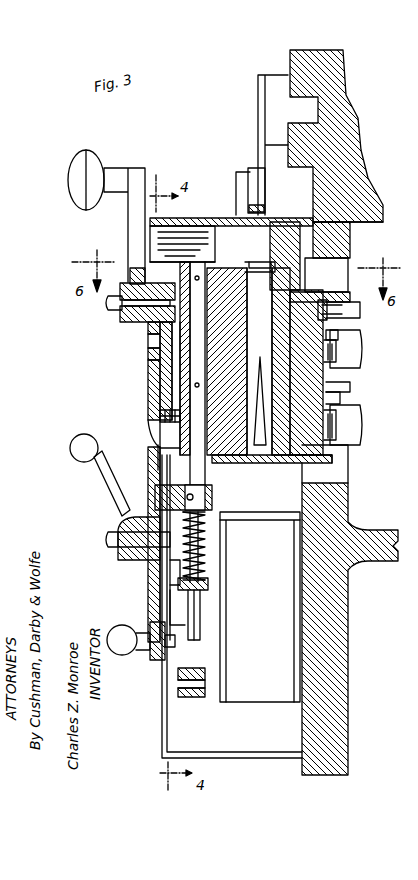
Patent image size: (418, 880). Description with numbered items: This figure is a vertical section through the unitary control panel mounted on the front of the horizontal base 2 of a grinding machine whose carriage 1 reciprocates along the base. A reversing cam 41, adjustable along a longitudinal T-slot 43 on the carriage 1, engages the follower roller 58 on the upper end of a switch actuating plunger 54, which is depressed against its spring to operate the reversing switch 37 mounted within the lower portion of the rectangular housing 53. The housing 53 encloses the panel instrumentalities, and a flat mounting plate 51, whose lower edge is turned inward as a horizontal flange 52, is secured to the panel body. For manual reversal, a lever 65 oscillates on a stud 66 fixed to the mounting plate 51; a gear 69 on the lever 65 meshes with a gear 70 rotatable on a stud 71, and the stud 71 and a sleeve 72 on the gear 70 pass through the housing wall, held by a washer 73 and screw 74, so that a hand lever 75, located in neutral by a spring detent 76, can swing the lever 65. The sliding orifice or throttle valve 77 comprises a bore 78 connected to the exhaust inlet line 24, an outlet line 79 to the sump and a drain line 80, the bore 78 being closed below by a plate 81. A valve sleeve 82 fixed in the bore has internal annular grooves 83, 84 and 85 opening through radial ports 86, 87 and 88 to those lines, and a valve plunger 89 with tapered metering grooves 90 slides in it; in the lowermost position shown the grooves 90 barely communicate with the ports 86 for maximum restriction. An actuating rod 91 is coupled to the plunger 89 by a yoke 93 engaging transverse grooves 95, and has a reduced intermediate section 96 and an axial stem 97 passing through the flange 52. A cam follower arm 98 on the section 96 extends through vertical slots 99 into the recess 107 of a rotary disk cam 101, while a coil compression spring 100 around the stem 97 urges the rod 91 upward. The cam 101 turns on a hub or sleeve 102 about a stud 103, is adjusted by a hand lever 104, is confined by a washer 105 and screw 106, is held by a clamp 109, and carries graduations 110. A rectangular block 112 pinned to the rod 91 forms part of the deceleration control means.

The carriage 1 is at (322, 50).
The horizontal base 2 is at (340, 694).
The exhaust inlet line 24 is at (358, 350).
The reversing switch 37 is at (254, 702).
The reversing cam 41 is at (274, 80).
The longitudinal T-slot 43 is at (320, 108).
The mounting plate 51 is at (164, 362).
The horizontal flange 52 is at (200, 603).
The rectangular housing 53 is at (234, 762).
The switch actuating plunger 54 is at (244, 172).
The follower roller 58 is at (258, 190).
The lever 65 is at (152, 346).
The stud 66 is at (150, 336).
The gear 69 is at (152, 358).
The gear 70 is at (212, 262).
The stud 71 is at (140, 322).
The sleeve 72 is at (193, 262).
The washer 73 is at (122, 312).
The screw 74 is at (108, 302).
The hand lever 75 is at (70, 176).
The spring detent 76 is at (132, 268).
The orifice or throttle valve 77 is at (274, 265).
The bore 78 is at (354, 432).
The outlet line 79 is at (350, 416).
The drain line 80 is at (354, 302).
The plate 81 is at (282, 458).
The valve sleeve 82 is at (352, 318).
The internal annular groove 83 is at (340, 334).
The internal annular groove 84 is at (250, 458).
The internal annular groove 85 is at (318, 290).
The radial inlet ports 86 is at (258, 362).
The radial outlet ports 87 is at (302, 466).
The radial ports 88 is at (228, 282).
The valve plunger 89 is at (318, 190).
The metering grooves 90 is at (346, 384).
The actuating rod 91 is at (162, 406).
The yoke 93 is at (218, 268).
The transverse grooves 95 is at (258, 262).
The intermediate rod section 96 is at (212, 495).
The axial stem 97 is at (194, 618).
The cam follower arm 98 is at (160, 478).
The vertical slots 99 is at (148, 462).
The coil compression spring 100 is at (208, 530).
The rotary disk cam 101 is at (182, 575).
The hub or sleeve 102 is at (178, 584).
The stud 103 is at (134, 517).
The hand lever 104 is at (70, 444).
The washer 105 is at (172, 568).
The screw 106 is at (108, 536).
The recess 107 is at (156, 450).
The clamp 109 is at (150, 660).
The graduations 110 is at (170, 602).
The block 112 is at (158, 386).